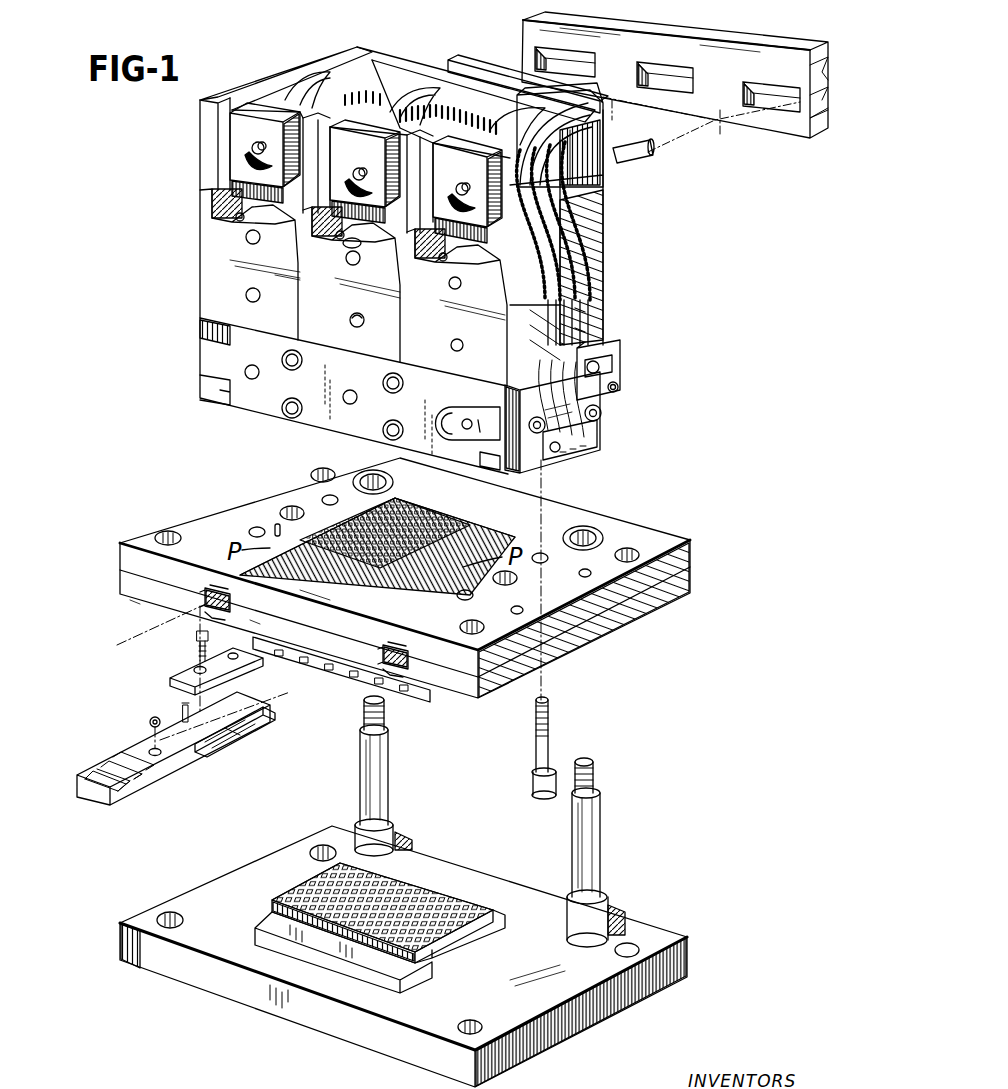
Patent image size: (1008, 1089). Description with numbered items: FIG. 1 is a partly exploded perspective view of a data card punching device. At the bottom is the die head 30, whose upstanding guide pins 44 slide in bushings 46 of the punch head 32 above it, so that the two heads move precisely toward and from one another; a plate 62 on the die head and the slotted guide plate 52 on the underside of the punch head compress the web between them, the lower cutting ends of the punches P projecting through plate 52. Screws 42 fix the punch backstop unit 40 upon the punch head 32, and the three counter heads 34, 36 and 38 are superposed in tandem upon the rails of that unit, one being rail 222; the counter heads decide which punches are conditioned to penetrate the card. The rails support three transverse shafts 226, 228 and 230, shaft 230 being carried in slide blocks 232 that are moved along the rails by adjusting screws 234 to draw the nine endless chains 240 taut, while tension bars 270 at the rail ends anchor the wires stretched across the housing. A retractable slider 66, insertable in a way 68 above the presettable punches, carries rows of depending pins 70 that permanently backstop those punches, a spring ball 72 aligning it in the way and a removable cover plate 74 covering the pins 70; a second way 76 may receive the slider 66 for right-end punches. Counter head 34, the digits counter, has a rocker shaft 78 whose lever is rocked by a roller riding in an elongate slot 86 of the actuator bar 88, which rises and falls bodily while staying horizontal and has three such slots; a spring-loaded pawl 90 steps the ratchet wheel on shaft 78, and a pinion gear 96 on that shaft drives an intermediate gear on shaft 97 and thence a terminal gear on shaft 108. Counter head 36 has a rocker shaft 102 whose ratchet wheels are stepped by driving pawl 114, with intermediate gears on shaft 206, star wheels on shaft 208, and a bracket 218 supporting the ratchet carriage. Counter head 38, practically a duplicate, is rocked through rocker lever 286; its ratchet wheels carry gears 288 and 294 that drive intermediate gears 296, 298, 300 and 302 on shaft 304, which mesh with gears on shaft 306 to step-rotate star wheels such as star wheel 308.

The die head 30 is at (347, 1040).
The punch head 32 is at (468, 702).
The counter head 34 is at (200, 265).
The counter head 36 is at (313, 327).
The counter head 38 is at (603, 297).
The punch backstop unit 40 is at (200, 337).
The screws 42 is at (553, 733).
The guide pins 44 is at (390, 805).
The bushings 46 is at (357, 482).
The guide plate 52 is at (403, 693).
The plate 62 is at (460, 910).
The slider 66 is at (163, 775).
The way 68 is at (210, 583).
The pins 70 is at (240, 720).
The spring ball 72 is at (150, 722).
The cover plate 74 is at (170, 678).
The second way 76 is at (400, 660).
The rocker shaft 78 is at (248, 148).
The elongate slot 86 is at (592, 65).
The actuator bar 88 is at (700, 42).
The pawl 90 is at (317, 90).
The pinion gear 96 is at (343, 72).
The shaft 97 is at (253, 237).
The rocker shaft 102 is at (353, 262).
The shaft 108 is at (253, 295).
The driving pawl 114 is at (428, 100).
The shaft 206 is at (334, 275).
The shaft 208 is at (367, 333).
The bracket 218 is at (477, 87).
The rail 222 is at (242, 402).
The shaft 226 is at (252, 372).
The shaft 228 is at (350, 397).
The shaft 230 is at (467, 419).
The slide blocks 232 is at (479, 423).
The adjusting screws 234 is at (617, 380).
The endless chain 240 is at (615, 408).
The tension bars 270 is at (597, 440).
The rocker lever 286 is at (637, 173).
The gear 288 is at (577, 185).
The gear 294 is at (587, 130).
The intermediate gear 296 is at (587, 275).
The intermediate gear 298 is at (597, 255).
The intermediate gear 300 is at (582, 238).
The intermediate gear 302 is at (593, 210).
The shaft 304 is at (455, 283).
The shaft 306 is at (451, 345).
The star wheel 308 is at (580, 332).